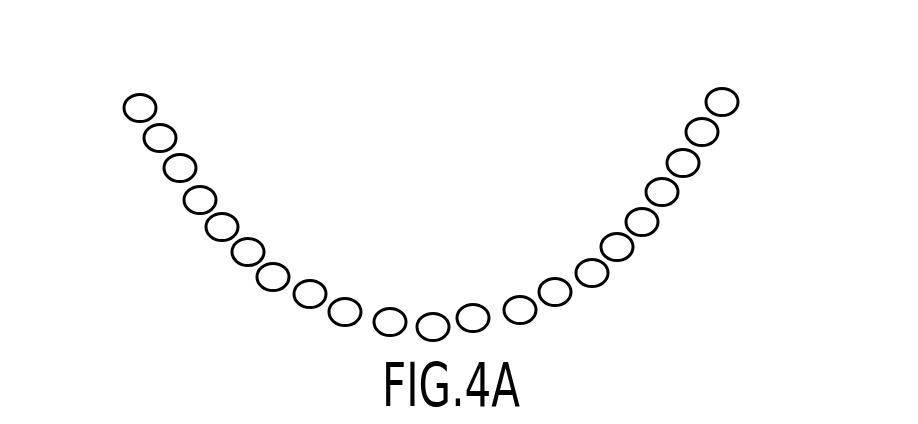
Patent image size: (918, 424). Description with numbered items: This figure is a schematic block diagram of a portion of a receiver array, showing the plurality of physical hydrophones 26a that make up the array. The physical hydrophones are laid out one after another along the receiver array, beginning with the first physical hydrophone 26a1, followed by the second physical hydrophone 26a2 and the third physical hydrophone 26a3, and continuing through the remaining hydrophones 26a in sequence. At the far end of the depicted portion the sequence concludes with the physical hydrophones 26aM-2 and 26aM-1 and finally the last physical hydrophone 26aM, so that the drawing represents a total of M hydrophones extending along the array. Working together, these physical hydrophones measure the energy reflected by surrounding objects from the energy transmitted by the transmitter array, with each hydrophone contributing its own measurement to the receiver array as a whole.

The physical hydrophone 26a1 is at (123, 108).
The physical hydrophone 26a2 is at (178, 137).
The physical hydrophone 26a3 is at (196, 165).
The physical hydrophones 26a is at (216, 198).
The physical hydrophone 26aM-2 is at (667, 162).
The physical hydrophone 26aM-1 is at (685, 128).
The physical hydrophone 26aM is at (718, 89).